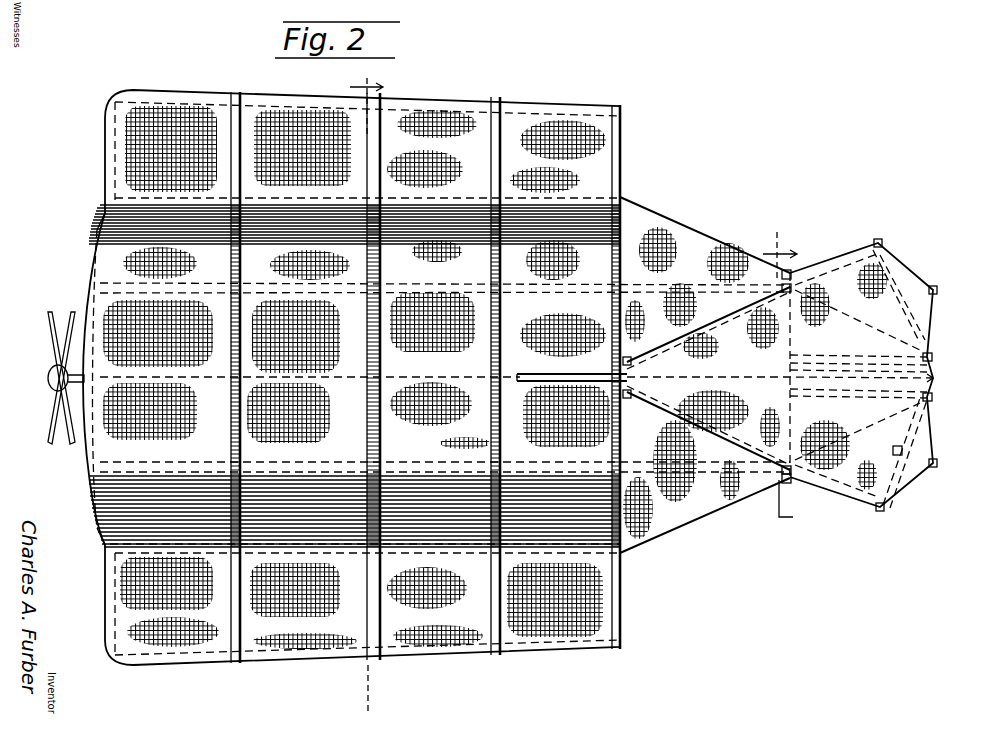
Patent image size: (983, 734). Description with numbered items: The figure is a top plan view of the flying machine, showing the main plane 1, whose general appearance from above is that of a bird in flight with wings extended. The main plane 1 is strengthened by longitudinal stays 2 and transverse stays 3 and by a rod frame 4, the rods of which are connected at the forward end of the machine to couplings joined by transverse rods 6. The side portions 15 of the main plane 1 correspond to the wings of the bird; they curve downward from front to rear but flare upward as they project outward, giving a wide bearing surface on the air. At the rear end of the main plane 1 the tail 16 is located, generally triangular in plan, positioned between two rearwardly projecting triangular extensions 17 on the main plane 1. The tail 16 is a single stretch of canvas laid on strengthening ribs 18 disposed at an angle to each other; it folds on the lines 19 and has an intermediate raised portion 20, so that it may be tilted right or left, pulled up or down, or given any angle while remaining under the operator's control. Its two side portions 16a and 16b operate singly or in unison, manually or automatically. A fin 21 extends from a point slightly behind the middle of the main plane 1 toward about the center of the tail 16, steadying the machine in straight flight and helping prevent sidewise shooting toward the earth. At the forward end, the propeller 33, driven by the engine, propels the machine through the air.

The main plane 1 is at (110, 305).
The longitudinal stays 2 is at (348, 200).
The transverse stays 3 is at (241, 265).
The frame 4 is at (366, 395).
The transverse rods 6 is at (780, 383).
The side portions 15 is at (198, 108).
The tail 16 is at (858, 372).
The side portion of the tail 16a is at (888, 262).
The side portion of the tail 16b is at (890, 478).
The triangular extensions 17 is at (687, 246).
The strengthening ribs 18 is at (832, 260).
The fold lines 19 is at (900, 356).
The intermediate raised portion 20 is at (933, 378).
The fin 21 is at (575, 375).
The propeller 33 is at (45, 379).